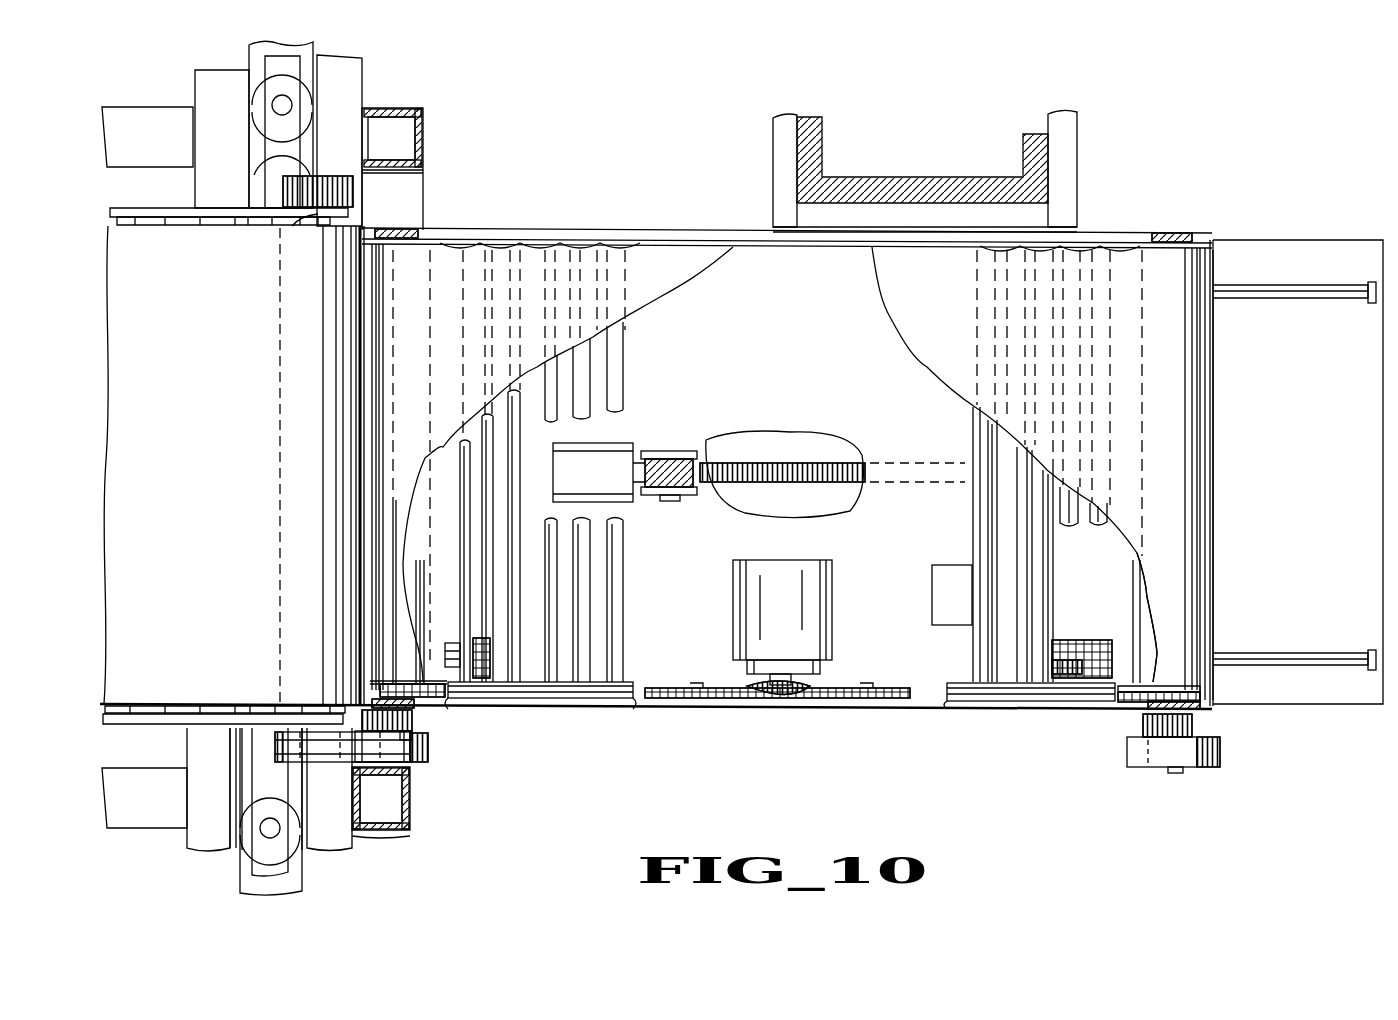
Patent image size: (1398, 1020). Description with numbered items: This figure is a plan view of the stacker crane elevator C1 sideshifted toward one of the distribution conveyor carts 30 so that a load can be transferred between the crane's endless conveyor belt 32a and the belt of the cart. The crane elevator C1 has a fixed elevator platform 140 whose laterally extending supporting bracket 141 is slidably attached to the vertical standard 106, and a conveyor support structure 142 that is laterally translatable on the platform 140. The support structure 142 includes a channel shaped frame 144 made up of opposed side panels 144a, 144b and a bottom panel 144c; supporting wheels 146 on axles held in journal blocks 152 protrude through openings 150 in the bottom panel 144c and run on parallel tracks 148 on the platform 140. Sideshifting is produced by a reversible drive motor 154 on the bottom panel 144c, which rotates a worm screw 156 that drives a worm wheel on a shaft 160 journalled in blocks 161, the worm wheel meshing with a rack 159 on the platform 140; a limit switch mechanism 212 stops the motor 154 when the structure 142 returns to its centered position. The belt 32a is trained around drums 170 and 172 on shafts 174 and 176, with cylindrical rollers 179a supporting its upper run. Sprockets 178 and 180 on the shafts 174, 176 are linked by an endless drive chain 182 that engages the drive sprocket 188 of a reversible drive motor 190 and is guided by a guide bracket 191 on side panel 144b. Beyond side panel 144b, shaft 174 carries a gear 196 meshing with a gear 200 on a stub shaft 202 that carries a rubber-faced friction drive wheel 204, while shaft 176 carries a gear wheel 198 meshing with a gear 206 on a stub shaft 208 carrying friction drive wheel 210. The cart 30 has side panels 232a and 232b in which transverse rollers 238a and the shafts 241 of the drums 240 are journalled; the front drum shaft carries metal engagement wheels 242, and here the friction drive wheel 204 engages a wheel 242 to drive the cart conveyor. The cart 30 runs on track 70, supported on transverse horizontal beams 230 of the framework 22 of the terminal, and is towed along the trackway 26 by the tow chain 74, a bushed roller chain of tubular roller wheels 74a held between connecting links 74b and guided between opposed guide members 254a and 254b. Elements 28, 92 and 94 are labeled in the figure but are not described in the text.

The framework 22 is at (425, 112).
The trackway 26 is at (238, 68).
The support 28 is at (178, 203).
The distribution conveyor cart 30 is at (158, 209).
The endless conveyor belt 32a is at (665, 290).
The track 70 is at (316, 56).
The tow chain 74 is at (290, 870).
The tubular roller wheels 74a is at (300, 102).
The connecting links 74b is at (268, 783).
The bearing block 92 is at (405, 231).
The bearing block 94 is at (1167, 233).
The vertical standard 106 is at (822, 123).
The fixed elevator platform 140 is at (1298, 472).
The supporting bracket 141 is at (773, 138).
The conveyor support structure 142 is at (1216, 344).
The channel shaped frame 144 is at (625, 231).
The side panel 144a is at (1086, 233).
The side panel 144b is at (897, 714).
The bottom panel 144c is at (699, 368).
The supporting wheels 146 is at (512, 690).
The tracks 148 is at (1265, 285).
The openings 150 is at (443, 652).
The journal blocks 152 is at (1050, 666).
The reversible drive motor 154 is at (572, 456).
The worm screw 156 is at (684, 457).
The rack 159 is at (840, 471).
The shaft 160 is at (674, 501).
The blocks 161 is at (652, 451).
The drum 170 is at (412, 541).
The drum 172 is at (1160, 596).
The shaft 174 is at (395, 683).
The shaft 176 is at (1180, 684).
The sprocket 178 is at (375, 692).
The cylindrical rollers 179a is at (590, 611).
The sprocket 180 is at (1202, 698).
The endless drive chain 182 is at (732, 700).
The drive sprocket 188 is at (804, 700).
The reversible drive motor 190 is at (820, 599).
The guide bracket 191 is at (637, 702).
The gear 196 is at (414, 719).
The gear wheel 198 is at (1148, 736).
The gear 200 is at (428, 739).
The stub shaft 202 is at (392, 777).
The friction drive wheel 204 is at (430, 752).
The gear 206 is at (1192, 738).
The stub shaft 208 is at (1170, 776).
The friction drive wheel 210 is at (1146, 762).
The limit switch mechanism 212 is at (957, 573).
The transverse horizontal beams 230 is at (138, 855).
The side panel 232a is at (147, 726).
The side panel 232b is at (224, 226).
The transverse rollers 238a is at (167, 710).
The drum 240 is at (278, 335).
The shaft 241 is at (305, 231).
The metal engagement wheels 242 is at (356, 191).
The guide member 254a is at (350, 85).
The guide member 254b is at (212, 74).
The crane elevator C1 is at (703, 228).